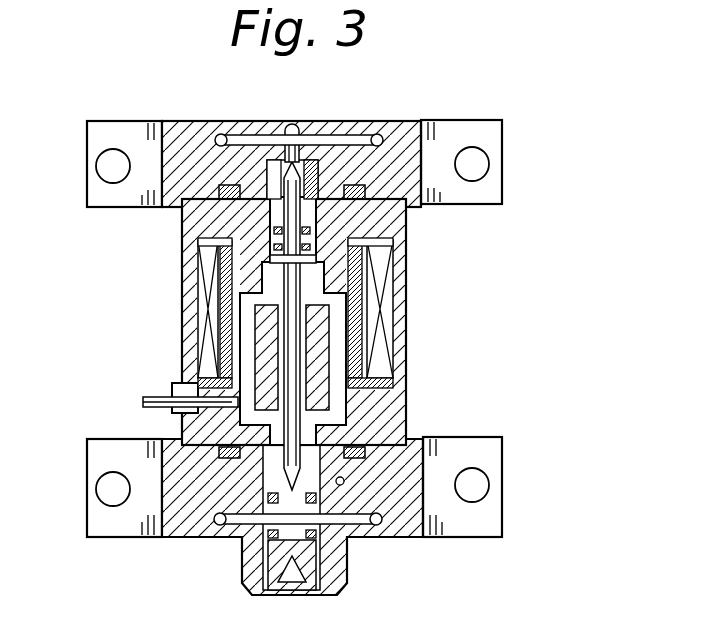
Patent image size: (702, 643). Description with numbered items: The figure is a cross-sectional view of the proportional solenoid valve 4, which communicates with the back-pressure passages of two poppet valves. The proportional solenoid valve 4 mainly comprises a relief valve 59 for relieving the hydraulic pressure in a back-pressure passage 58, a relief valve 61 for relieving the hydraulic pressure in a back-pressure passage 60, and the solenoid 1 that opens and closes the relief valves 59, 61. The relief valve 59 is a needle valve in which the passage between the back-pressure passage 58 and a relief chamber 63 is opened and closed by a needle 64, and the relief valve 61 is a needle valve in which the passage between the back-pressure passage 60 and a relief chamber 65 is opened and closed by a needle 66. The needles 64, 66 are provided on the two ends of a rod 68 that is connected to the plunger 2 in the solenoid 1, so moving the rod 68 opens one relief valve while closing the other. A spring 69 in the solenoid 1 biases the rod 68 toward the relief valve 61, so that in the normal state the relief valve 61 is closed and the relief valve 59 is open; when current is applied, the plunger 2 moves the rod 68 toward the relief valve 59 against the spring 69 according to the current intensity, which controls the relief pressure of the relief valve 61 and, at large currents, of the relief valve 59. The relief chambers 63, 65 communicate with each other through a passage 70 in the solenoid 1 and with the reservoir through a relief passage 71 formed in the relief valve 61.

The solenoid 1 is at (407, 362).
The plunger 2 is at (335, 400).
The proportional solenoid valve 4 is at (328, 340).
The back-pressure passage 58 is at (250, 134).
The relief valve 59 is at (408, 121).
The back-pressure passage 60 is at (360, 524).
The relief valve 61 is at (415, 521).
The relief chamber 63 is at (308, 186).
The needle 64 is at (322, 133).
The relief chamber 65 is at (290, 480).
The needle 66 is at (282, 493).
The rod 68 is at (298, 332).
The spring 69 is at (240, 238).
The passage 70 is at (182, 342).
The relief passage 71 is at (345, 481).